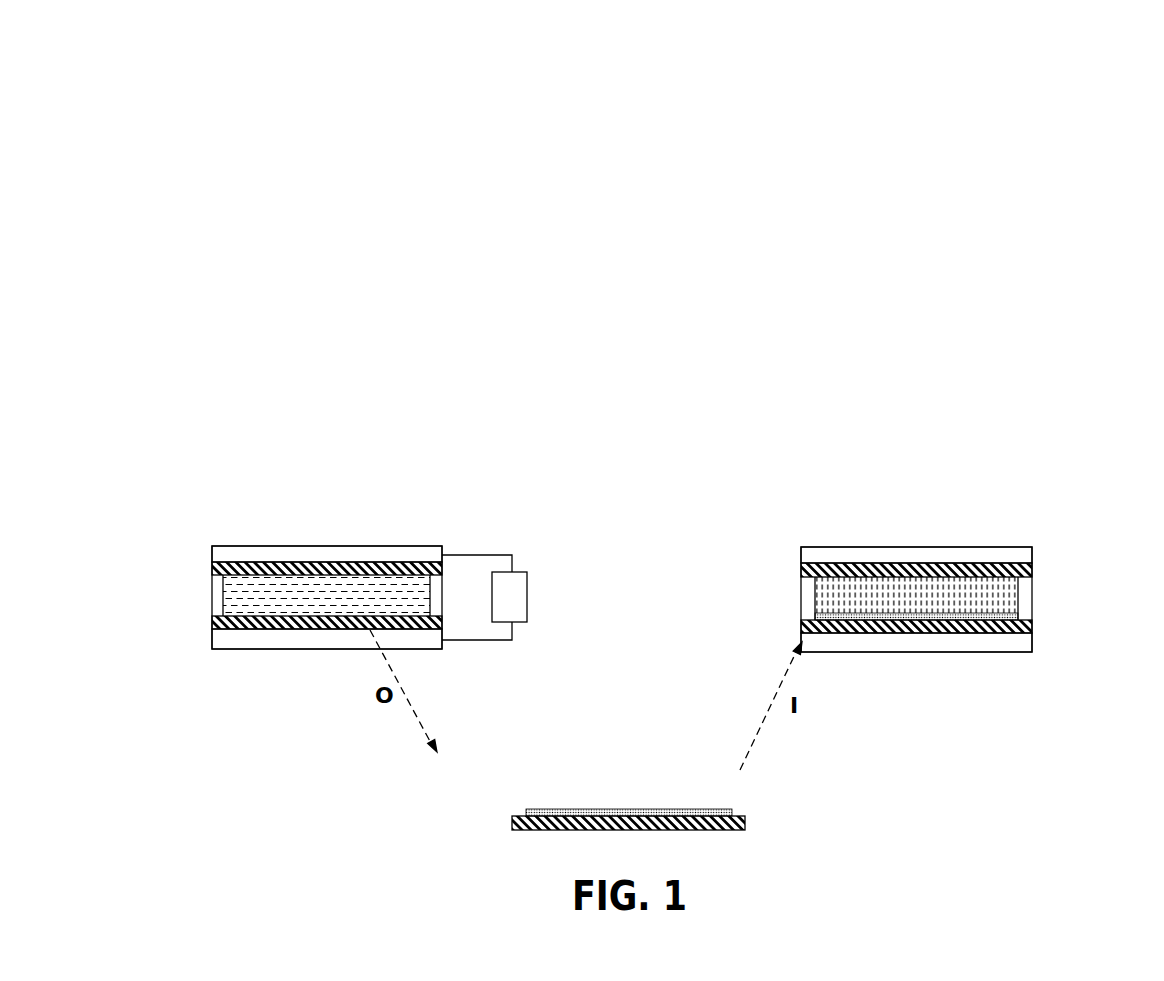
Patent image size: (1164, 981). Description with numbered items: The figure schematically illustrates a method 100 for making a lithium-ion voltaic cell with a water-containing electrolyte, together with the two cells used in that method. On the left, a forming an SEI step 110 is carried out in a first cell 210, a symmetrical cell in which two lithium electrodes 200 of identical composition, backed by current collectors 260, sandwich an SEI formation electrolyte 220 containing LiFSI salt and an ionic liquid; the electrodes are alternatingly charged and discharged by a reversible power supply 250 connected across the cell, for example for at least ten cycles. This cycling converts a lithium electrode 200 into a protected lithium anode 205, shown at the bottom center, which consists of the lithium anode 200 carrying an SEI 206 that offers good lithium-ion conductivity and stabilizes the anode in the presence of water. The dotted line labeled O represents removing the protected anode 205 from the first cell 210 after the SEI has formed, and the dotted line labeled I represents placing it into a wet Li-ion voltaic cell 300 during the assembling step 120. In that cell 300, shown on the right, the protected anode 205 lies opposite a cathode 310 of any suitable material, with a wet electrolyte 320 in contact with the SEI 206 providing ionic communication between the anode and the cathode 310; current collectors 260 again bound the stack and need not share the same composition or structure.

The method 100 is at (202, 120).
The forming an SEI step 110 is at (288, 346).
The assembling step 120 is at (972, 381).
The lithium electrode 200 is at (212, 568).
The protected lithium anode 205 is at (1045, 624).
The SEI 206 is at (800, 615).
The first cell 210 is at (430, 494).
The SEI formation electrolyte 220 is at (243, 596).
The reversible power supply 250 is at (527, 590).
The current collectors 260 is at (217, 547).
The wet Li-ion voltaic cell 300 is at (837, 497).
The cathode 310 is at (1033, 570).
The wet electrolyte 320 is at (1008, 593).